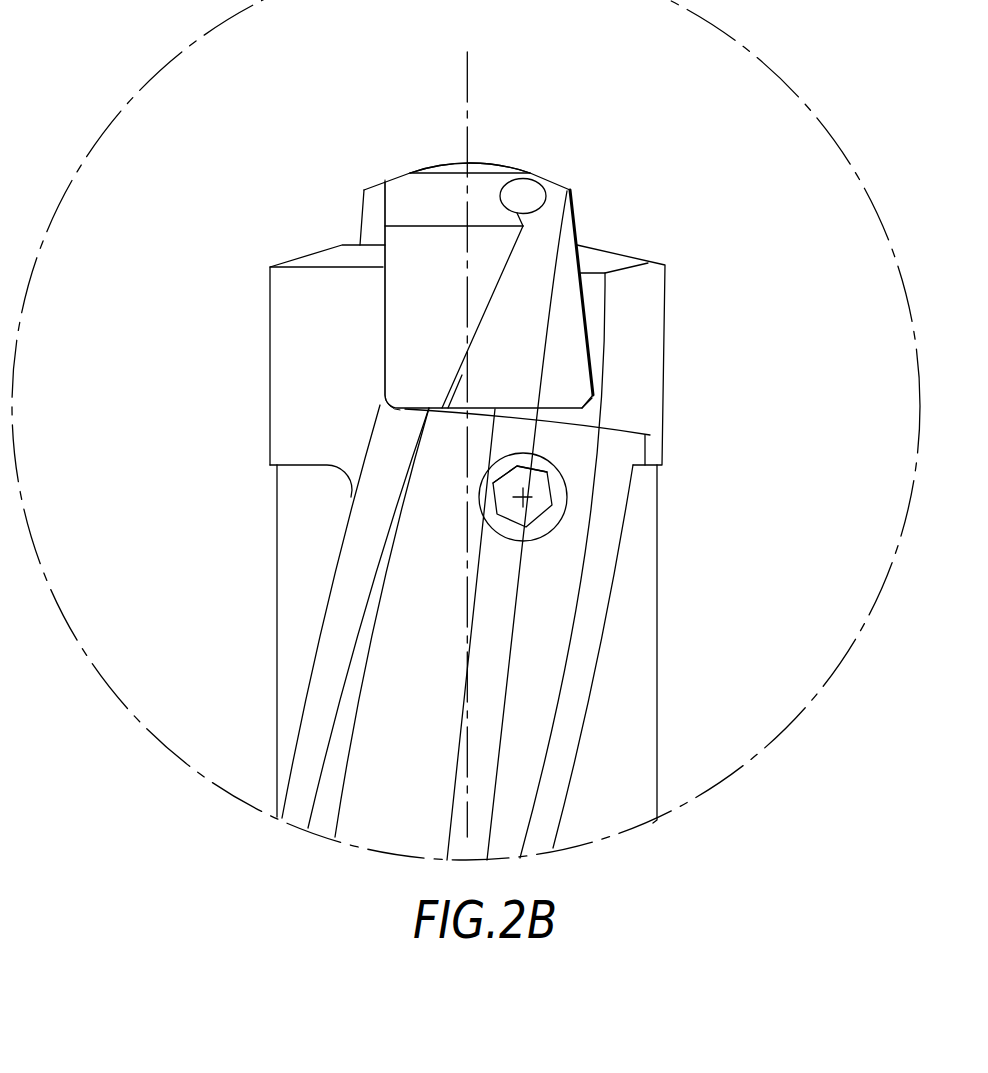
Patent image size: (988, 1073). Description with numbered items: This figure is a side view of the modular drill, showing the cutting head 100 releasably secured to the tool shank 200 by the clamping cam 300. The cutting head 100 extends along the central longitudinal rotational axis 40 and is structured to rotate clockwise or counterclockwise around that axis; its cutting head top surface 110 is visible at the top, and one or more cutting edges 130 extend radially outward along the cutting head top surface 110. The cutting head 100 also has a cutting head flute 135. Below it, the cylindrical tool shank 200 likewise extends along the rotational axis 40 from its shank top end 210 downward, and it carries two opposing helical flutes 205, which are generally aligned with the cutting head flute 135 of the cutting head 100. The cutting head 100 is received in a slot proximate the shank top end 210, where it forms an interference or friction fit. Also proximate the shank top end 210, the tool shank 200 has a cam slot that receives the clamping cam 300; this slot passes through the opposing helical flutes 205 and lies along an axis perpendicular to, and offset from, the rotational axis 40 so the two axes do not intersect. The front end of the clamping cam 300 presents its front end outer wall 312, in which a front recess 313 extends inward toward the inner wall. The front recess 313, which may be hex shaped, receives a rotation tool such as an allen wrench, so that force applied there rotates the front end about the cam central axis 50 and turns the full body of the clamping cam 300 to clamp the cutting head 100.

The central longitudinal rotational axis 40 is at (468, 748).
The cam central axis 50 is at (528, 500).
The cutting head 100 is at (382, 232).
The cutting head top surface 110 is at (410, 192).
The cutting edge 130 is at (543, 185).
The cutting head flute 135 is at (540, 238).
The tool shank 200 is at (298, 641).
The helical flute 205 is at (404, 538).
The shank top end 210 is at (256, 466).
The clamping cam 300 is at (552, 486).
The front end outer wall 312 is at (558, 490).
The front recess 313 is at (500, 478).